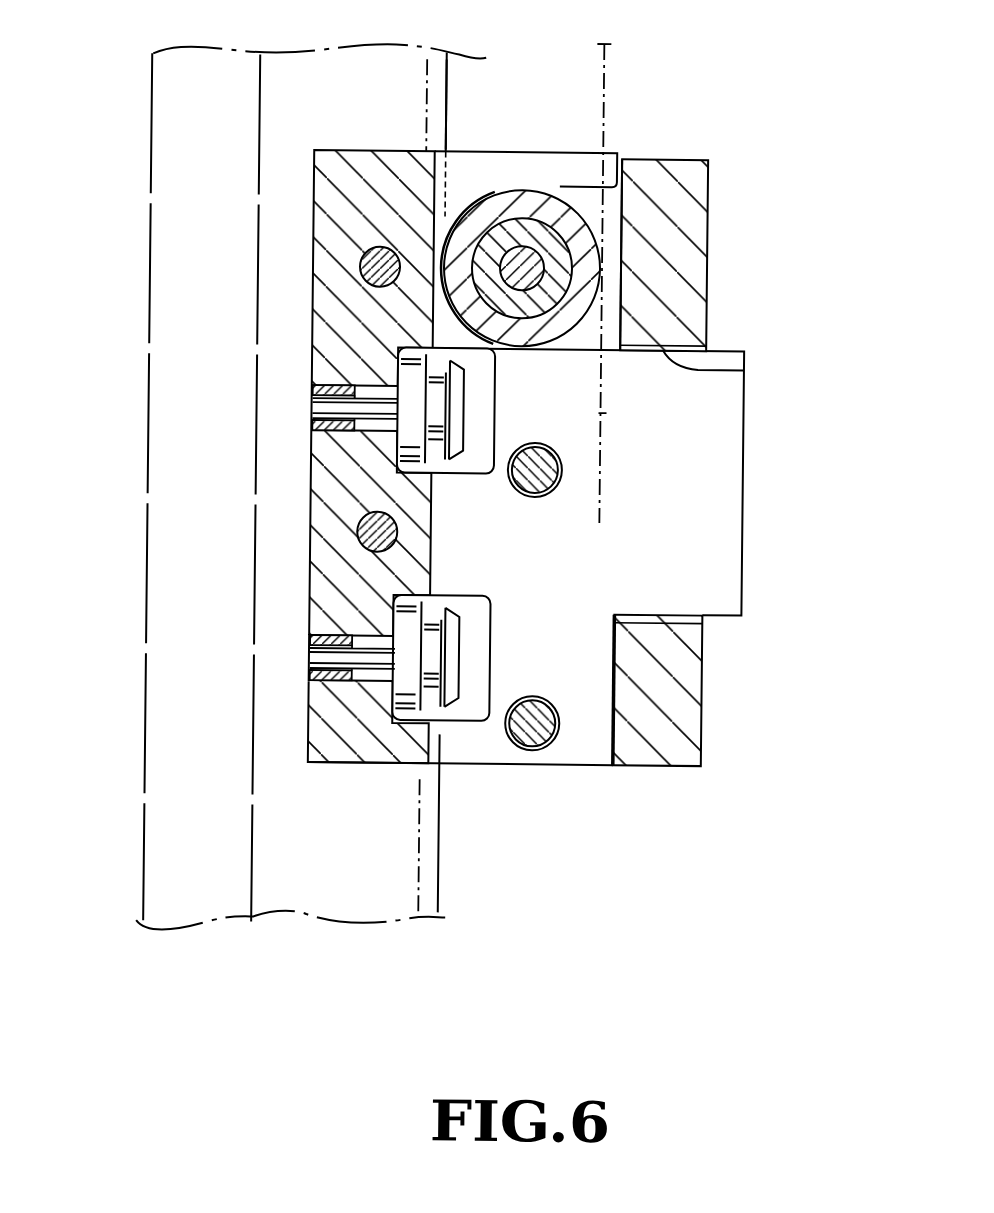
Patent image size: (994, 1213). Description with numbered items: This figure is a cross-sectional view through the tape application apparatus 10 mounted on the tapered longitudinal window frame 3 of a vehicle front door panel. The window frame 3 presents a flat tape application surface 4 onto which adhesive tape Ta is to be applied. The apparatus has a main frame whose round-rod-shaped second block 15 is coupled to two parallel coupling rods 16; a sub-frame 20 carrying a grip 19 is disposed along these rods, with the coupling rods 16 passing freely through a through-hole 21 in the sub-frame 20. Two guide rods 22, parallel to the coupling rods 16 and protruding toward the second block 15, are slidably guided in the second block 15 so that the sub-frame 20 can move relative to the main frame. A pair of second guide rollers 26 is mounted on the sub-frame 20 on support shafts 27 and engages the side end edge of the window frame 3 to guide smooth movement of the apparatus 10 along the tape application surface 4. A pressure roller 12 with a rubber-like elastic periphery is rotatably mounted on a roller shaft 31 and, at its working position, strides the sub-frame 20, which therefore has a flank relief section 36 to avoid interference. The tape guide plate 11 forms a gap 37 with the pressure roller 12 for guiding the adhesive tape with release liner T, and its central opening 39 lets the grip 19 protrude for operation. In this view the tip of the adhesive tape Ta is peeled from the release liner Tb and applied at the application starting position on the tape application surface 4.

The longitudinal window frame 3 is at (180, 726).
The tape application surface 4 is at (457, 858).
The tape application apparatus 10 is at (547, 413).
The tape guide plate 11 is at (697, 688).
The pressure roller 12 is at (489, 210).
The second block 15 is at (614, 206).
The coupling rods 16 is at (562, 469).
The grip 19 is at (724, 558).
The sub-frame 20 is at (344, 174).
The through-hole 21 is at (540, 497).
The guide rods 22 is at (358, 265).
The second guide rollers 26 is at (442, 402).
The support shafts 27 is at (312, 408).
The roller shaft 31 is at (533, 265).
The flank relief section 36 is at (564, 192).
The gap 37 is at (611, 289).
The opening 39 is at (741, 368).
The adhesive tape with release liner T is at (601, 82).
The adhesive tape Ta is at (446, 82).
The release liner Tb is at (606, 412).